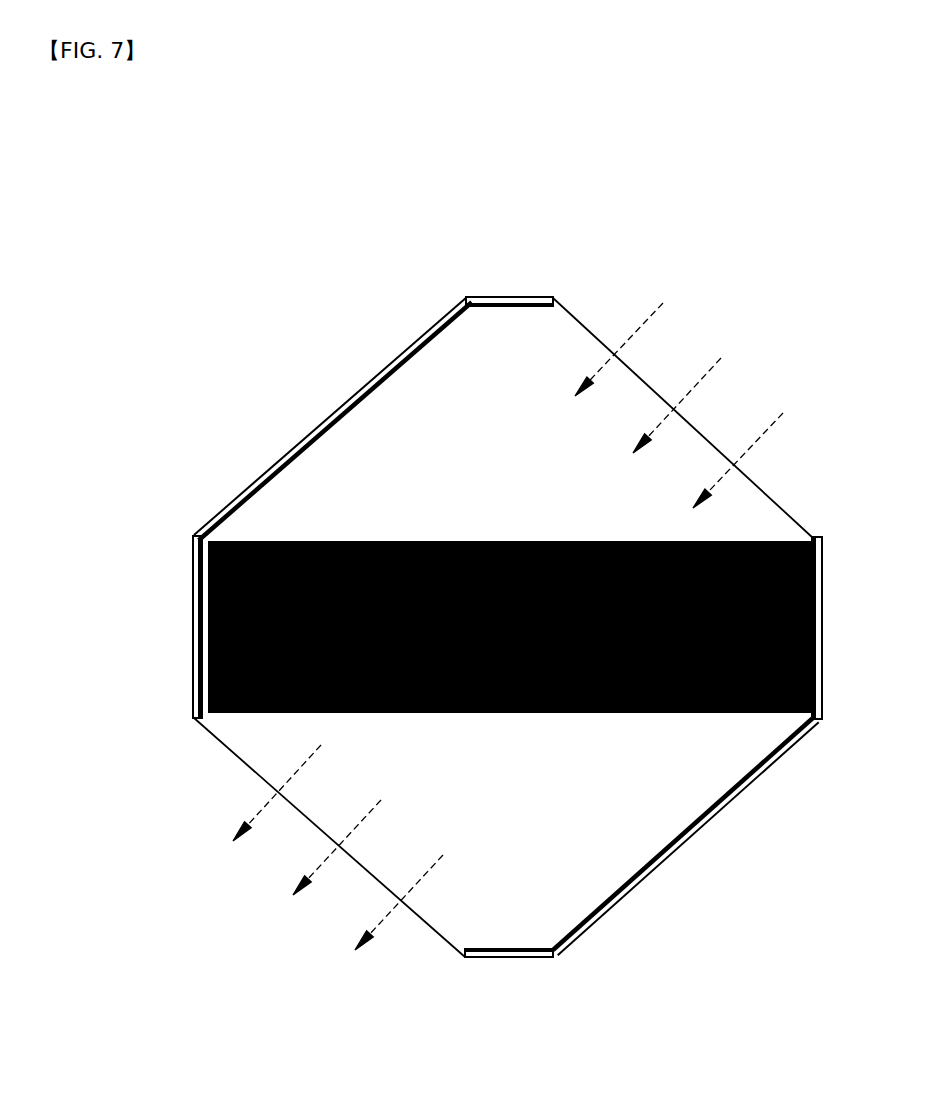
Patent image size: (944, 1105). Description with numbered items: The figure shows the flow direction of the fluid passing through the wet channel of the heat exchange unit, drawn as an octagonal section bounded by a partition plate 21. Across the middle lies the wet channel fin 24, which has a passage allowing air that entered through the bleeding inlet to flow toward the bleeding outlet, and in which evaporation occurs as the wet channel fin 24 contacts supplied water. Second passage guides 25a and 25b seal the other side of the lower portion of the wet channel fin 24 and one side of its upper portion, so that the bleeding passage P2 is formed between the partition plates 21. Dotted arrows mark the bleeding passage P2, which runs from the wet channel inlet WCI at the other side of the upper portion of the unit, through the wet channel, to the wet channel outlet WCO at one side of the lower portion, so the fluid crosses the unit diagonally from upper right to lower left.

The partition plate 21 is at (565, 876).
The wet channel fin 24 is at (333, 497).
The second passage guide 25a is at (693, 823).
The second passage guide 25b is at (390, 348).
The wet channel inlet WCI is at (679, 403).
The wet channel outlet WCO is at (324, 847).
The bleeding passage P2 is at (505, 626).